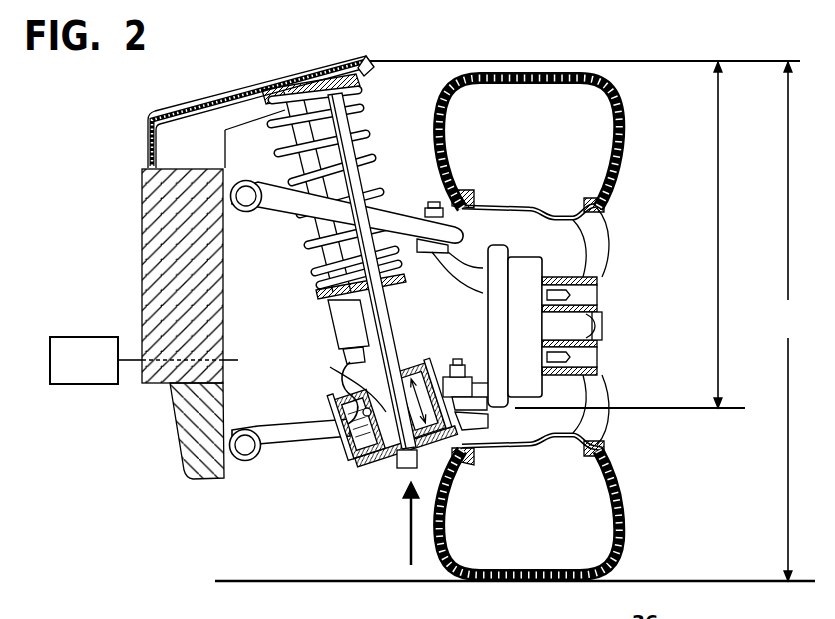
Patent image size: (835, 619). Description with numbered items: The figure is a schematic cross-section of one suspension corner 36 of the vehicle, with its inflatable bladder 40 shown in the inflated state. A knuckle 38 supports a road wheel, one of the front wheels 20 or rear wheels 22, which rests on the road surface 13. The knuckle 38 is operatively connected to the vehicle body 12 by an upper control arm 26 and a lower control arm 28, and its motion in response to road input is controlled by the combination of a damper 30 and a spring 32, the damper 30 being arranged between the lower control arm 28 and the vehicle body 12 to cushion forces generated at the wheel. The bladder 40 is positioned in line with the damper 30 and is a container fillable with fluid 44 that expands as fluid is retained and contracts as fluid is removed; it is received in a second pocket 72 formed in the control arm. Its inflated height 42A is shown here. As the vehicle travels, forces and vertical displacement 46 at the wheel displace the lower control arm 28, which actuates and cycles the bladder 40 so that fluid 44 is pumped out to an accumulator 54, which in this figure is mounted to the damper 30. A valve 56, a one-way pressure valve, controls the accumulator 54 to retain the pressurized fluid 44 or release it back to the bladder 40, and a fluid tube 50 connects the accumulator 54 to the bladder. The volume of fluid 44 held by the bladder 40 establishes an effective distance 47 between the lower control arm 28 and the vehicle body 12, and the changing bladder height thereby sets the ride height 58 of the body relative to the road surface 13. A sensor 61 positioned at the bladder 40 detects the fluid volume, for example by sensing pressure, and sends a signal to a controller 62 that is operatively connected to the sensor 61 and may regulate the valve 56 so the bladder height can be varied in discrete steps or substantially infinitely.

The vehicle body 12 is at (283, 80).
The road surface 13 is at (480, 587).
The front wheels 20 is at (612, 494).
The rear wheels 22 is at (530, 327).
The upper control arm 26 is at (398, 224).
The lower control arm 28 is at (307, 439).
The damper 30 is at (350, 108).
The spring 32 is at (306, 247).
The suspension corner 36 is at (450, 52).
The knuckle 38 is at (523, 274).
The bladder 40 is at (351, 441).
The inflated height 42A is at (415, 434).
The fluid 44 is at (348, 414).
The displacement 46 is at (409, 526).
The effective distance 47 is at (718, 196).
The fluid tube 50 is at (350, 376).
The accumulator 54 is at (340, 320).
The valve 56 is at (355, 358).
The ride height 58 is at (788, 321).
The sensor 61 is at (393, 396).
The controller 62 is at (144, 360).
The second pocket 72 is at (462, 433).